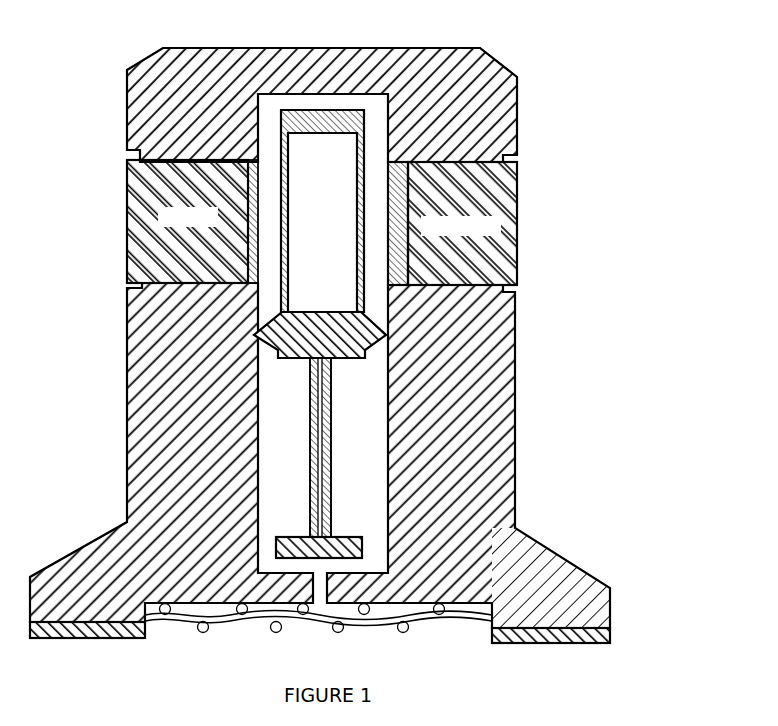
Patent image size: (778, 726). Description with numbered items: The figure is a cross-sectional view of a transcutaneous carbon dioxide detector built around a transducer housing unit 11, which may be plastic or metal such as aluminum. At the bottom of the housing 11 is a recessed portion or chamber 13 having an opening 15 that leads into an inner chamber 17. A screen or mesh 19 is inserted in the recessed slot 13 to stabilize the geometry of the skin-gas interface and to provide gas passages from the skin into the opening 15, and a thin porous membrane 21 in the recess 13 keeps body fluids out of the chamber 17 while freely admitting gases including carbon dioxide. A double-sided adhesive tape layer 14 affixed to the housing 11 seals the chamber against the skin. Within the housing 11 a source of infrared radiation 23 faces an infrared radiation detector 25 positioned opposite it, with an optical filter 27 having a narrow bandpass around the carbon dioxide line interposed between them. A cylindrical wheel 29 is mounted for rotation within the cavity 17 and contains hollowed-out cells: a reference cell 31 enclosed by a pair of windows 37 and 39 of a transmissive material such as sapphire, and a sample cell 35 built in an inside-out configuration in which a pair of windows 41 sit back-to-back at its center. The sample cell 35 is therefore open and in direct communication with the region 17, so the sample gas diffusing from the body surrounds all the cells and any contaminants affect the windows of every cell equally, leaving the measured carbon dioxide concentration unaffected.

The transducer housing unit 11 is at (257, 47).
The recessed portion or chamber 13 is at (485, 599).
The double-sided adhesive tape layer 14 is at (610, 643).
The opening 15 is at (322, 595).
The inner chamber 17 is at (386, 505).
The screen or mesh 19 is at (205, 633).
The thin porous membrane 21 is at (277, 633).
The source of infrared radiation 23 is at (127, 203).
The infrared radiation detector 25 is at (517, 222).
The optical filter 27 is at (396, 162).
The cylindrical wheel 29 is at (290, 110).
The reference cell 31 is at (328, 140).
The sample cell 35 is at (362, 556).
The window 37 is at (370, 150).
The window 39 is at (253, 162).
The windows 41 is at (320, 387).